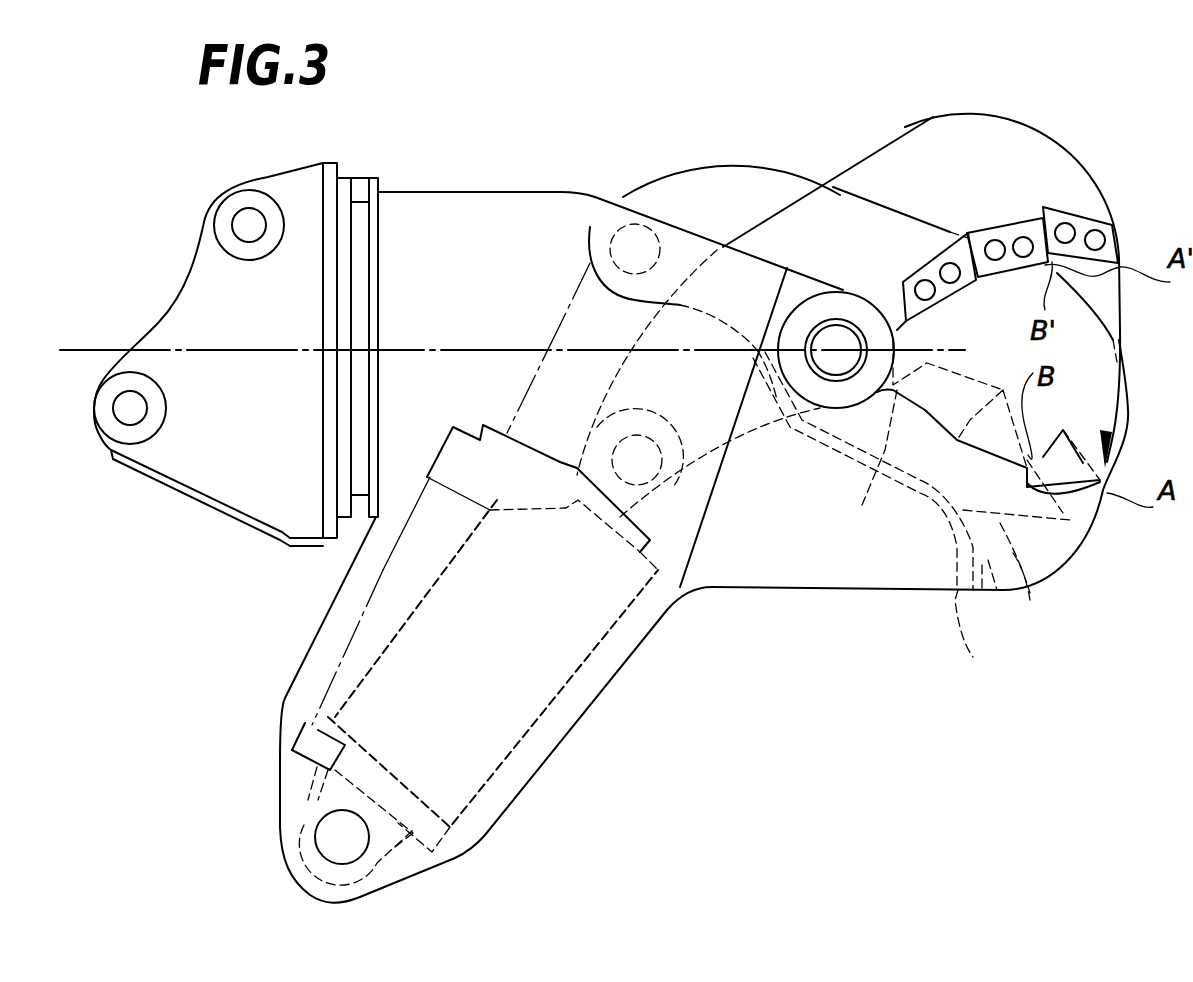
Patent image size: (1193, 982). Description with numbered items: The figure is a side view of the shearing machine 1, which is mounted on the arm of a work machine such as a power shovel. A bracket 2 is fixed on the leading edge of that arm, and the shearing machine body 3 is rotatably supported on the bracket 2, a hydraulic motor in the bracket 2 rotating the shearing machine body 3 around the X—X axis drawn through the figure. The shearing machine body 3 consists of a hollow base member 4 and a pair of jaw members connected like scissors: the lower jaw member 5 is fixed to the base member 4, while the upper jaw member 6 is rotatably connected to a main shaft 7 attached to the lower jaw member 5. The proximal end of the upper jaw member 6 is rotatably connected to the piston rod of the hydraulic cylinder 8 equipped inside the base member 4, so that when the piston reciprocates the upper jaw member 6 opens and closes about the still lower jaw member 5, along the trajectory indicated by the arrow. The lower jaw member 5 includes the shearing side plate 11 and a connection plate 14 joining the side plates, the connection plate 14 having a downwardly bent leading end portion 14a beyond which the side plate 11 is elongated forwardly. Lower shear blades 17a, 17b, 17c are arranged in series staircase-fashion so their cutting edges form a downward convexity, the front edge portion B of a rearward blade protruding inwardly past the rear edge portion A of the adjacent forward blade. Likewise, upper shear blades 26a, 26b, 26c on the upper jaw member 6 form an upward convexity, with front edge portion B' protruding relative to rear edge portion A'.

The shearing machine 1 is at (160, 745).
The bracket 2 is at (183, 503).
The shearing machine body 3 is at (808, 664).
The hollow base member 4 is at (513, 223).
The lower jaw member 5 is at (861, 596).
The upper jaw member 6 is at (862, 172).
The main shaft 7 is at (820, 363).
The hydraulic cylinder 8 is at (556, 692).
The shearing side plate 11 is at (912, 570).
The connection plate 14 is at (980, 642).
The downwardly bent leading end portion 14a is at (1000, 597).
The lower shear blade 17a is at (1077, 557).
The lower shear blade 17b is at (1035, 587).
The lower shear blade 17c is at (870, 478).
The upper shear blade 26a is at (1087, 225).
The upper shear blade 26b is at (1018, 232).
The upper shear blade 26c is at (930, 277).